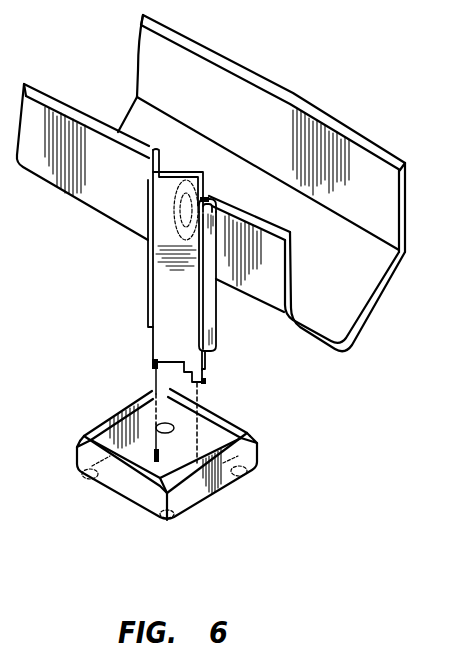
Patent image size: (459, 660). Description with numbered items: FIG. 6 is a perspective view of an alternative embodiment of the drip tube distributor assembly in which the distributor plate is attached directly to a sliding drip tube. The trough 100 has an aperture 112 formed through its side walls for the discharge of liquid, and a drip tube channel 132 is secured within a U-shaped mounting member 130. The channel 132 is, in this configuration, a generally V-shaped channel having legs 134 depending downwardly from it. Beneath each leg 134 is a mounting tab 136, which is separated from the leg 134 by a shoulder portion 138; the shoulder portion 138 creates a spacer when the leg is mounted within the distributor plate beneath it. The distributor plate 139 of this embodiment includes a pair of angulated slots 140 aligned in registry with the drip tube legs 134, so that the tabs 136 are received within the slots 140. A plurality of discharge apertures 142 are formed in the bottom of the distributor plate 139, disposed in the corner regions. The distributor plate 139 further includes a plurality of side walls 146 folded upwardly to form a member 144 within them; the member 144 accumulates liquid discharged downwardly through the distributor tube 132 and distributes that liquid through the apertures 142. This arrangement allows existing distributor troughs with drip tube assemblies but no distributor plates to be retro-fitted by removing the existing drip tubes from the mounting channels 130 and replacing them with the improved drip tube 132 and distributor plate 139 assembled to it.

The trough 100 is at (124, 177).
The aperture 112 is at (218, 191).
The U-shaped mounting member 130 is at (208, 319).
The channel 132 is at (165, 309).
The legs 134 is at (204, 362).
The mounting tab 136 is at (153, 364).
The shoulder portion 138 is at (203, 377).
The distributor plate 139 is at (133, 494).
The angulated slots 140 is at (102, 420).
The discharge apertures 142 is at (151, 418).
The member 144 is at (172, 463).
The side walls 146 is at (242, 452).